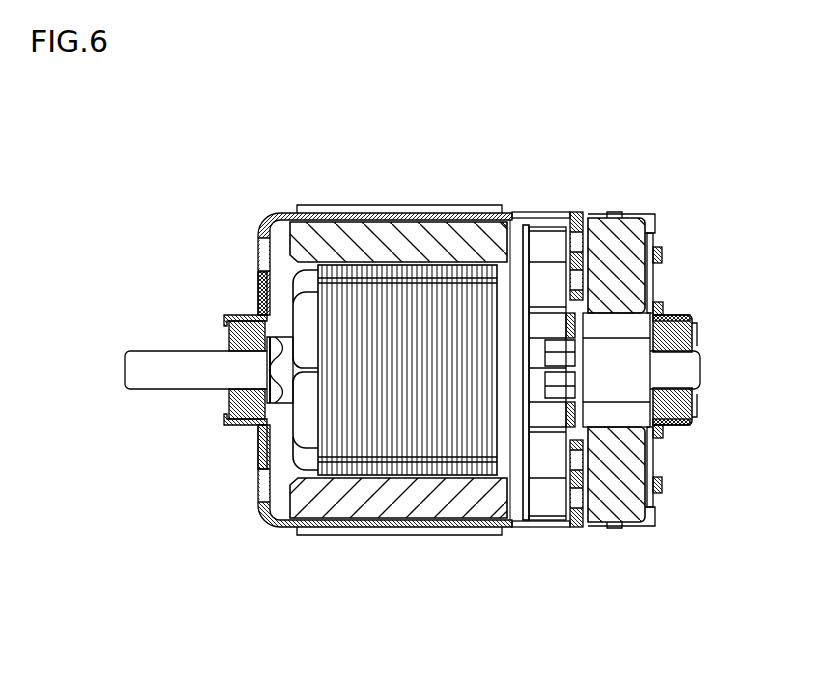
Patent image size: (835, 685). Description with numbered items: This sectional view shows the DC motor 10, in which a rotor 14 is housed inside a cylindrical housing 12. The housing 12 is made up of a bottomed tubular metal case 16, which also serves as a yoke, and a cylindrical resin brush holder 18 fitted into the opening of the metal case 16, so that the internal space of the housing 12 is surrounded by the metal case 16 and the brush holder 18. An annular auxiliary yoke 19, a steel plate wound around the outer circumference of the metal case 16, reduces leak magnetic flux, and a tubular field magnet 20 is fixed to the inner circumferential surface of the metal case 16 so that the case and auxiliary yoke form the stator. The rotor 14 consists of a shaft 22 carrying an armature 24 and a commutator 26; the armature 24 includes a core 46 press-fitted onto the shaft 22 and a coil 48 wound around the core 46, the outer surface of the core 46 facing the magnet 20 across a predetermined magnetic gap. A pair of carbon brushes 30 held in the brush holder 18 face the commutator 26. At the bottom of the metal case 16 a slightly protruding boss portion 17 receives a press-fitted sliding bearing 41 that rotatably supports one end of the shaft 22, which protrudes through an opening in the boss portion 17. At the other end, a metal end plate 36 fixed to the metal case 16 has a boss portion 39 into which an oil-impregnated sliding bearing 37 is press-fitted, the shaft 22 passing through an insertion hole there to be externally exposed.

The DC motor 10 is at (524, 162).
The housing 12 is at (558, 206).
The rotor 14 is at (284, 430).
The metal case 16 is at (272, 212).
The boss portion 17 is at (247, 314).
The brush holder 18 is at (581, 207).
The auxiliary yoke 19 is at (400, 205).
The field magnet 20 is at (412, 535).
The shaft 22 is at (187, 350).
The armature 24 is at (480, 437).
The commutator 26 is at (612, 392).
The carbon brushes 30 is at (658, 233).
The end plate 36 is at (664, 257).
The sliding bearing 37 is at (694, 392).
The boss portion 39 is at (680, 427).
The sliding bearing 41 is at (228, 336).
The core 46 is at (330, 440).
The coil 48 is at (307, 436).